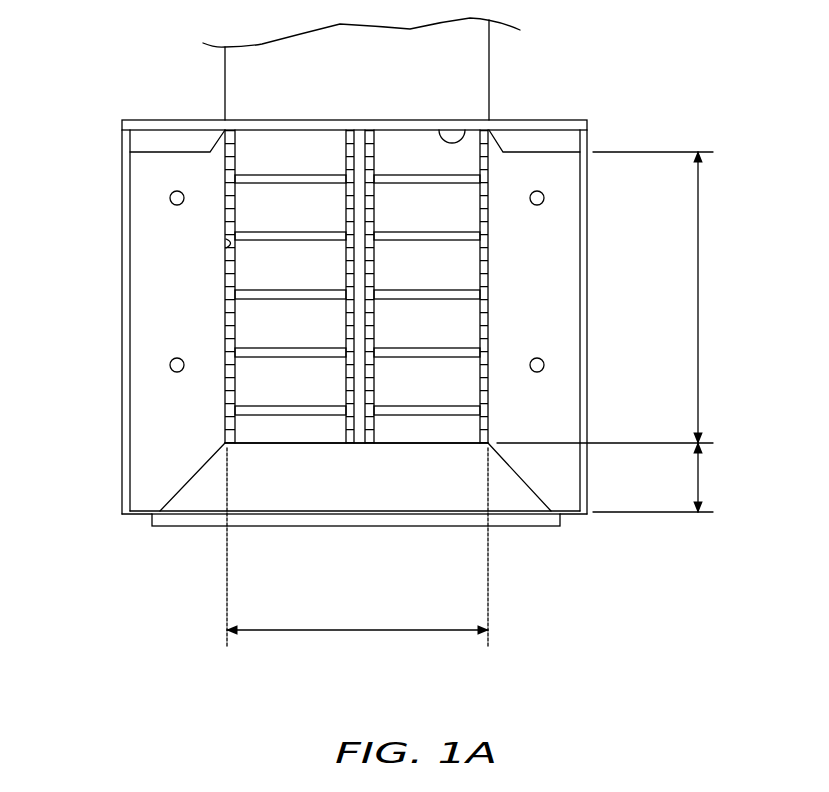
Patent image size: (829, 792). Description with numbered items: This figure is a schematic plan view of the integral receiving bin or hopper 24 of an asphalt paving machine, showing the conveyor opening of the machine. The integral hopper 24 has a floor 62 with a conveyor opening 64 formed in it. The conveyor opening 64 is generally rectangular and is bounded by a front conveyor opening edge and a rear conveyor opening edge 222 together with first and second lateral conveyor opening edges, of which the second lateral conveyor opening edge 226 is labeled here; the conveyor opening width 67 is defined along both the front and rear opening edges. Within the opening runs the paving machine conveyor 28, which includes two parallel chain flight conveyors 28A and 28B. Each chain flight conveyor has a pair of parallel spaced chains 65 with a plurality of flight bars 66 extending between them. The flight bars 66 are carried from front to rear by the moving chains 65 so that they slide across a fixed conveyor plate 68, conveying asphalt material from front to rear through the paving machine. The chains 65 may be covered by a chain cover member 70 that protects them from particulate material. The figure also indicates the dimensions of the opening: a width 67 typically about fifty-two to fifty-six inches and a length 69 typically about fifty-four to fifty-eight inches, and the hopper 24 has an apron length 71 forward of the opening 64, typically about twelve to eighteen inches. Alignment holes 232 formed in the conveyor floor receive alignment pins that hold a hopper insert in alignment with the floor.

The integral hopper 24 is at (582, 117).
The paving machine conveyor 28 is at (473, 59).
The chain flight conveyor 28A is at (226, 375).
The chain flight conveyor 28B is at (486, 375).
The floor 62 is at (196, 316).
The conveyor opening 64 is at (308, 443).
The chains 65 is at (373, 270).
The flight bars 66 is at (283, 232).
The width 67 is at (322, 630).
The fixed conveyor plate 68 is at (301, 341).
The length 69 is at (700, 215).
The chain cover member 70 is at (336, 495).
The apron length 71 is at (700, 478).
The rear conveyor opening edge 222 is at (457, 138).
The second lateral conveyor opening edge 226 is at (226, 243).
The alignment holes 232 is at (169, 196).